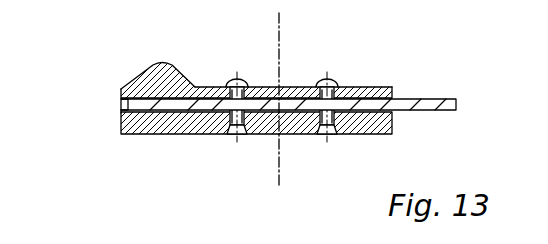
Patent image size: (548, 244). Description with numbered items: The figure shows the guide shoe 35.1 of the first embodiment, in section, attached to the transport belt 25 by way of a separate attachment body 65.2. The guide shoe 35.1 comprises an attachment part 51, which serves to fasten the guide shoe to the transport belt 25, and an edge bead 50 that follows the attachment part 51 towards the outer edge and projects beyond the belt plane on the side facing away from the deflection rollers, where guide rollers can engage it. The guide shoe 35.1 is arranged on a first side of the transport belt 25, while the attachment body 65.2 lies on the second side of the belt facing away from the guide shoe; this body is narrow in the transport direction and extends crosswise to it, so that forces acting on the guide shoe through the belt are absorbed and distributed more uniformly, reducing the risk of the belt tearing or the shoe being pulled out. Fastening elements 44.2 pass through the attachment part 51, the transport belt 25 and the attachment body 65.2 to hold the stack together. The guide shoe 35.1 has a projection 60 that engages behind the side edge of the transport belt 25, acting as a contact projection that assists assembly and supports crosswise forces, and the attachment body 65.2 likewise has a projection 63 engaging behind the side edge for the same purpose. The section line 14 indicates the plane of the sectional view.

The guide shoe 35.1 is at (120, 58).
The edge bead 50 is at (152, 76).
The attachment part 51 is at (367, 91).
The projection 60 is at (121, 100).
The projection 63 is at (121, 112).
The attachment body 65.2 is at (136, 145).
The transport belt 25 is at (433, 102).
The screw 44.2 is at (325, 136).
The section line 14 is at (277, 167).